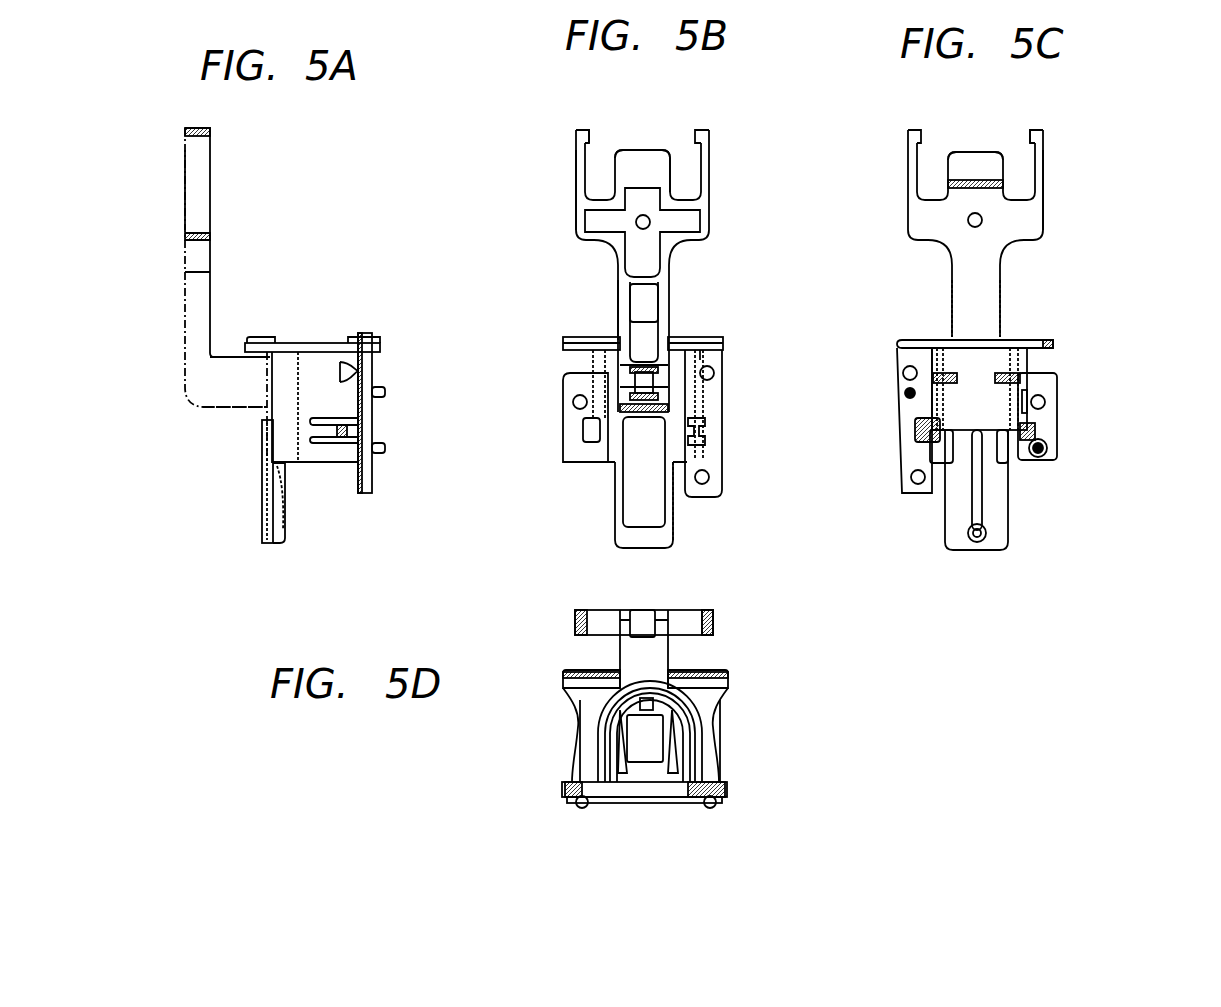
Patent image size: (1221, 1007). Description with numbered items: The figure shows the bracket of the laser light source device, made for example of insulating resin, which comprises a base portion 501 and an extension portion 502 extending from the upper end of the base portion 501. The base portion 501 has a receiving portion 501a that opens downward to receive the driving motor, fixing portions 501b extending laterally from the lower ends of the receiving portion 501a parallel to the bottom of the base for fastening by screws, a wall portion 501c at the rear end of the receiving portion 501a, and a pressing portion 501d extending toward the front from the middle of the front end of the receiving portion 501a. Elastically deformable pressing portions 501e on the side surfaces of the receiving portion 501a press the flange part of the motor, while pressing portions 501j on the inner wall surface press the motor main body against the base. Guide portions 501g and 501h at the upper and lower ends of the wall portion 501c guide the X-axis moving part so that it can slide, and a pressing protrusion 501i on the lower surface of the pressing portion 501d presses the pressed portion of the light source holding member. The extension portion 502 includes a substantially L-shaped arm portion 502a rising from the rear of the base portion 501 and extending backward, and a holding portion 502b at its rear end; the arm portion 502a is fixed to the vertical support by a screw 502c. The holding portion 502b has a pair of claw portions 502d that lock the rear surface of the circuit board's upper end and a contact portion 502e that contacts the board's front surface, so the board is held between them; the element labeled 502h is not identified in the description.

In FIG. 5A, the base portion 501 is at (265, 455).
In FIG. 5B, the base portion 501 is at (633, 468).
In FIG. 5C, the base portion 501 is at (918, 420).
In FIG. 5A, the receiving portion 501a is at (310, 388).
In FIG. 5B, the receiving portion 501a is at (605, 445).
In FIG. 5C, the receiving portion 501a is at (985, 400).
In FIG. 5D, the receiving portion 501a is at (598, 704).
In FIG. 5A, the fixing portions 501b is at (387, 393).
In FIG. 5B, the fixing portions 501b is at (715, 400).
In FIG. 5C, the fixing portions 501b is at (1045, 425).
In FIG. 5D, the fixing portions 501b is at (722, 758).
In FIG. 5A, the wall portion 501c is at (320, 341).
In FIG. 5B, the wall portion 501c is at (735, 345).
In FIG. 5C, the wall portion 501c is at (1058, 343).
In FIG. 5D, the wall portion 501c is at (712, 718).
In FIG. 5A, the pressing portion 501d is at (262, 510).
In FIG. 5B, the pressing portion 501d is at (633, 522).
In FIG. 5C, the pressing portion 501d is at (1005, 505).
In FIG. 5D, the pressing portion 501d is at (622, 680).
In FIG. 5A, the pressing portions 501e is at (357, 428).
In FIG. 5B, the pressing portions 501e is at (700, 428).
In FIG. 5C, the pressing portions 501e is at (1045, 438).
In FIG. 5A, the guide portion 501g is at (270, 335).
In FIG. 5B, the guide portion 501g is at (697, 337).
In FIG. 5D, the guide portion 501g is at (672, 676).
In FIG. 5A, the guide portion 501h is at (364, 337).
In FIG. 5C, the guide portion 501h is at (1020, 338).
In FIG. 5A, the pressing protrusion 501i is at (285, 533).
In FIG. 5C, the pressing protrusion 501i is at (986, 533).
In FIG. 5D, the pressing protrusion 501i is at (605, 747).
In FIG. 5C, the pressing portions 501j is at (945, 340).
In FIG. 5A, the extension portion 502 is at (185, 299).
In FIG. 5B, the extension portion 502 is at (615, 245).
In FIG. 5C, the extension portion 502 is at (1000, 290).
In FIG. 5D, the extension portion 502 is at (598, 643).
In FIG. 5A, the arm portion 502a is at (188, 344).
In FIG. 5B, the arm portion 502a is at (618, 300).
In FIG. 5C, the arm portion 502a is at (1000, 272).
In FIG. 5D, the arm portion 502a is at (670, 655).
In FIG. 5A, the holding portion 502b is at (192, 190).
In FIG. 5B, the holding portion 502b is at (580, 205).
In FIG. 5C, the holding portion 502b is at (1045, 185).
In FIG. 5D, the holding portion 502b is at (685, 608).
In FIG. 5C, the screw 502c is at (1040, 135).
In FIG. 5A, the claw portions 502d is at (210, 162).
In FIG. 5B, the claw portions 502d is at (590, 130).
In FIG. 5D, the claw portions 502d is at (714, 618).
In FIG. 5B, the contact portion 502e is at (648, 155).
In FIG. 5C, the contact portion 502e is at (975, 155).
In FIG. 5D, the contact portion 502e is at (642, 623).
In FIG. 5D, the base portion 502h is at (673, 805).